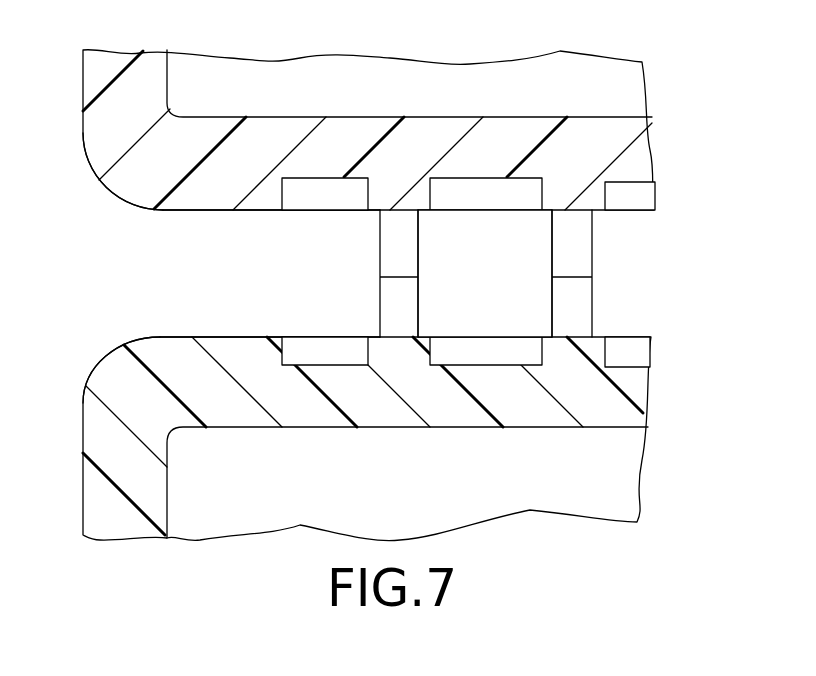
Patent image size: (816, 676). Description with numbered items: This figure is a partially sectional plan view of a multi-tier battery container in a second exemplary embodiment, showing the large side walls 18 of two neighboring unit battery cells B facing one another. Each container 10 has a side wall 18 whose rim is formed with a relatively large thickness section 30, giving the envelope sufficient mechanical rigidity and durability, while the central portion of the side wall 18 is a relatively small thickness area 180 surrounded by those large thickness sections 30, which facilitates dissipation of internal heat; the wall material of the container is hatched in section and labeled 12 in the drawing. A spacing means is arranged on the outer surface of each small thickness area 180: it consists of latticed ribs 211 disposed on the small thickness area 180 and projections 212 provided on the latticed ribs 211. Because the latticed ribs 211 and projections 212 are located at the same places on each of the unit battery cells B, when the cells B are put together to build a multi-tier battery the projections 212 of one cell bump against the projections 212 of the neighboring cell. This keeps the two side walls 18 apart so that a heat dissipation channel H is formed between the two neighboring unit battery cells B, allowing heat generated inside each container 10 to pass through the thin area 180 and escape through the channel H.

The container 10 is at (363, 100).
The insulating layer 12 is at (95, 94).
The unit battery cell B is at (90, 153).
The large thickness section 30 is at (142, 182).
The small thickness area 180 is at (338, 178).
The side wall 18 is at (493, 212).
The projection 212 is at (592, 243).
The latticed rib 211 is at (607, 185).
The heat dissipation channel H is at (518, 243).